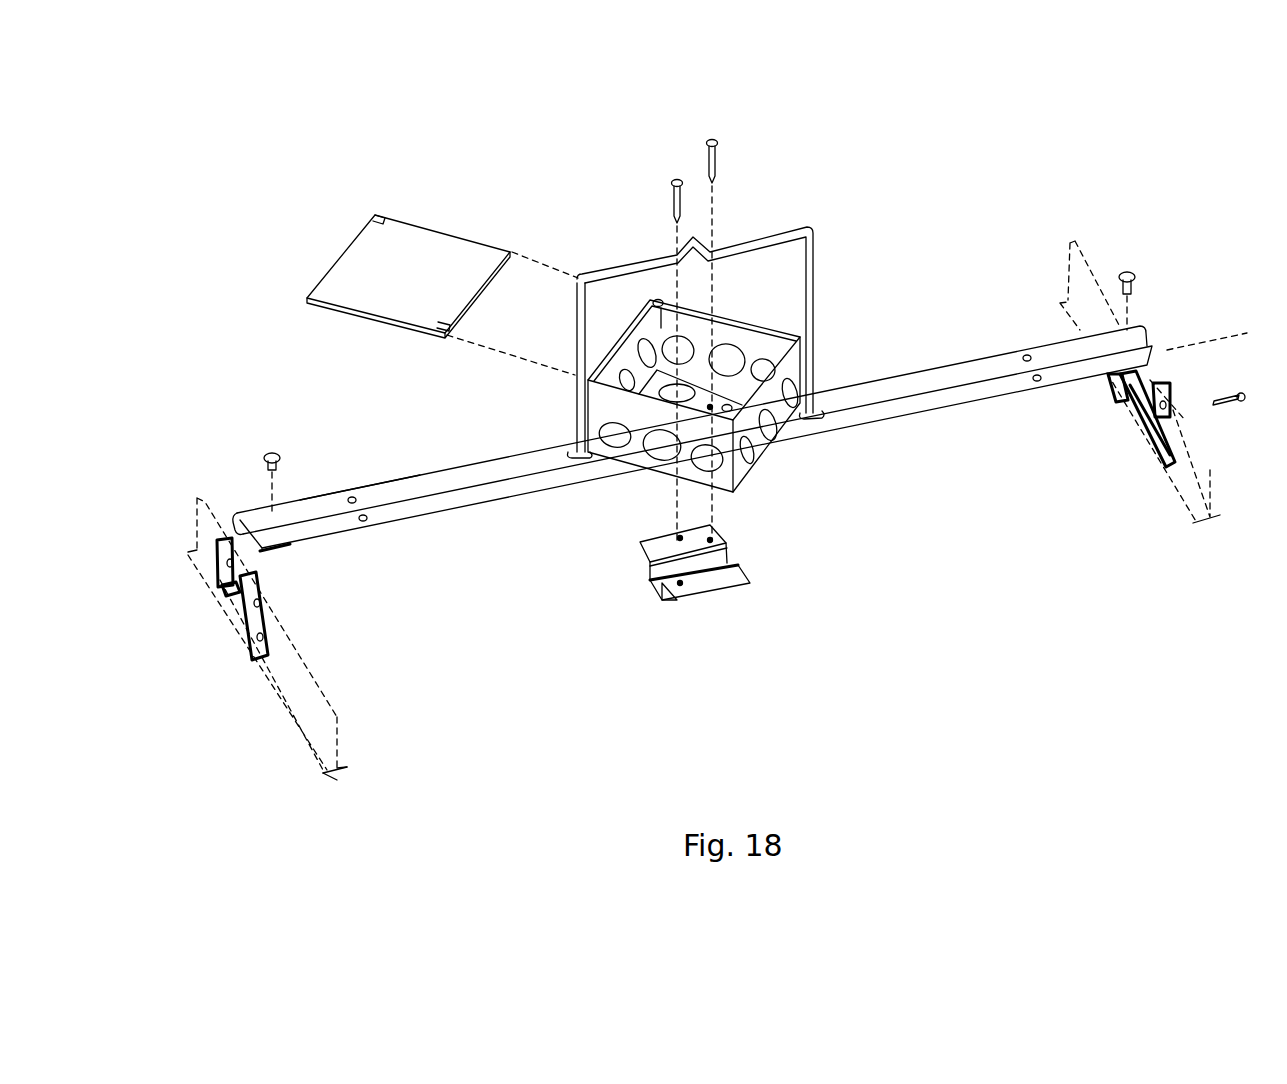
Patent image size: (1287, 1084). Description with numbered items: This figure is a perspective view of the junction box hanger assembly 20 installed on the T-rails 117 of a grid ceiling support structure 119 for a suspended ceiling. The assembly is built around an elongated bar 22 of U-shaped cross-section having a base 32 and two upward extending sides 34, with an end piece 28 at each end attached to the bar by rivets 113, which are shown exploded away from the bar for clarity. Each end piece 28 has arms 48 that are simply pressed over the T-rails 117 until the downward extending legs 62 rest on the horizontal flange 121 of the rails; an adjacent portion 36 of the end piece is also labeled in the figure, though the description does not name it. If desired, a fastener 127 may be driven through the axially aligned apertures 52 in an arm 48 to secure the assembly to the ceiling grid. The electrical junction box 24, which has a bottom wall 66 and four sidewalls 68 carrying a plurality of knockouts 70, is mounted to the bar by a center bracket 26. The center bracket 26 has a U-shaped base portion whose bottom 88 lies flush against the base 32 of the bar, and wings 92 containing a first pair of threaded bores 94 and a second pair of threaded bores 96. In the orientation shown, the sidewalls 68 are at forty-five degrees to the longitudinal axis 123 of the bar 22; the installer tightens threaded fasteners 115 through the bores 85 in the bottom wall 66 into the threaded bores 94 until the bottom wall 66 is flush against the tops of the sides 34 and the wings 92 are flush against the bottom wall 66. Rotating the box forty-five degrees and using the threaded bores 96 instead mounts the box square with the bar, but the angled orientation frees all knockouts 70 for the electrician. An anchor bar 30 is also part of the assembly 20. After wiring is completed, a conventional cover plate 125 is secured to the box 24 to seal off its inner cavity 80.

The junction box hanger assembly 20 is at (868, 528).
The elongated bar 22 is at (942, 415).
The electrical junction box 24 is at (734, 386).
The center bracket 26 is at (717, 586).
The end piece 28 is at (265, 590).
The anchor bar 30 is at (812, 260).
The base 32 is at (235, 515).
The upward extending sides 34 is at (413, 515).
The clip leg 36 is at (1150, 432).
The arm 48 is at (240, 588).
The aperture 52 is at (1172, 408).
The downward extending leg 62 is at (262, 655).
The bottom wall 66 is at (780, 370).
The sidewall 68 is at (660, 437).
The knockout 70 is at (662, 445).
The inner cavity 80 is at (770, 340).
The bore 85 is at (711, 405).
The bottom 88 is at (655, 590).
The wing 92 is at (745, 572).
The threaded bore 94 is at (712, 542).
The threaded bore 96 is at (678, 538).
The rivet 113 is at (264, 458).
The threaded fastener 115 is at (672, 200).
The T-rail 117 is at (345, 728).
The grid ceiling support structure 119 is at (338, 785).
The horizontal flange 121 is at (350, 765).
The longitudinal axis 123 is at (1200, 338).
The cover plate 125 is at (442, 295).
The fastener 127 is at (1225, 405).